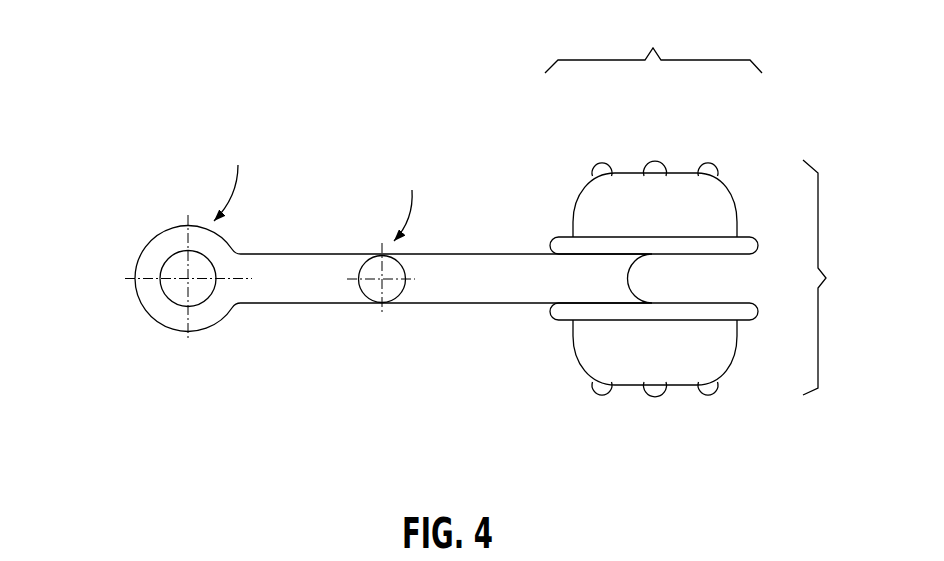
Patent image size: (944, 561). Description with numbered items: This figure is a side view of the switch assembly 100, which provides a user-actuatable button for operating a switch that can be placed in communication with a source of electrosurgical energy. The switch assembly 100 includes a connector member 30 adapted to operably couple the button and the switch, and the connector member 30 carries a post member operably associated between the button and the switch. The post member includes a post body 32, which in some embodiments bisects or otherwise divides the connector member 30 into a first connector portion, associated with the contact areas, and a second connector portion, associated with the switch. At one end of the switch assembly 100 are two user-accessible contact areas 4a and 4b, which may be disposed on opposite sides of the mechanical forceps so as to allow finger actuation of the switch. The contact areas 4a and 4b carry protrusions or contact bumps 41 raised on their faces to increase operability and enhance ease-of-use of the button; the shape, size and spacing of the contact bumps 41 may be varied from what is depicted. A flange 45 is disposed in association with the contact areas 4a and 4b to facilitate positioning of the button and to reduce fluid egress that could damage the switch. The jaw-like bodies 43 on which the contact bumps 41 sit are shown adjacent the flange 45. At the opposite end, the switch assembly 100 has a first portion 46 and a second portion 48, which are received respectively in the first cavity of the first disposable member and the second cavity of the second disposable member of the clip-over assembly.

The switch assembly 100 is at (193, 68).
The connector member 30 is at (410, 323).
The post body 32 is at (372, 268).
The contact bumps 41 is at (604, 165).
The jaw member 43 is at (713, 208).
The flange 45 is at (557, 247).
The first portion of the switch assembly 46 is at (97, 281).
The second portion of the switch assembly 48 is at (97, 223).
The user-accessible contact area 4a is at (579, 124).
The user-accessible contact area 4b is at (579, 439).